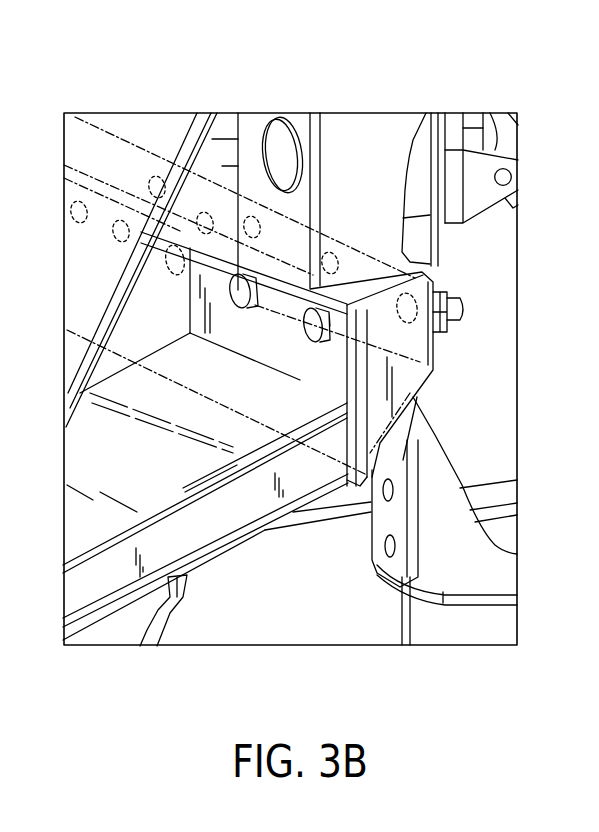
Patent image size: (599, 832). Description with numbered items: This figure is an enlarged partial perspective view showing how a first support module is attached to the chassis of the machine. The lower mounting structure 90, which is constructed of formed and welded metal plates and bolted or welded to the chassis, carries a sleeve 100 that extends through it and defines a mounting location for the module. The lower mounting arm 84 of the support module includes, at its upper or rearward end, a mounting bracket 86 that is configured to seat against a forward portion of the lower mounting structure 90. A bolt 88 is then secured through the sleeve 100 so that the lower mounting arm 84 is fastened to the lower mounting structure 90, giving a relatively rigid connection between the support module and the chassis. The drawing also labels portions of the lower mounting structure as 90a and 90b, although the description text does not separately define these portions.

The lower mounting arm 84 is at (190, 515).
The mounting bracket 86 is at (277, 333).
The bolt 88 is at (250, 266).
The lower mounting structure 90 is at (450, 373).
The upper bracket portion 90a is at (380, 283).
The lower bracket portion 90b is at (403, 460).
The sleeve 100 is at (307, 310).